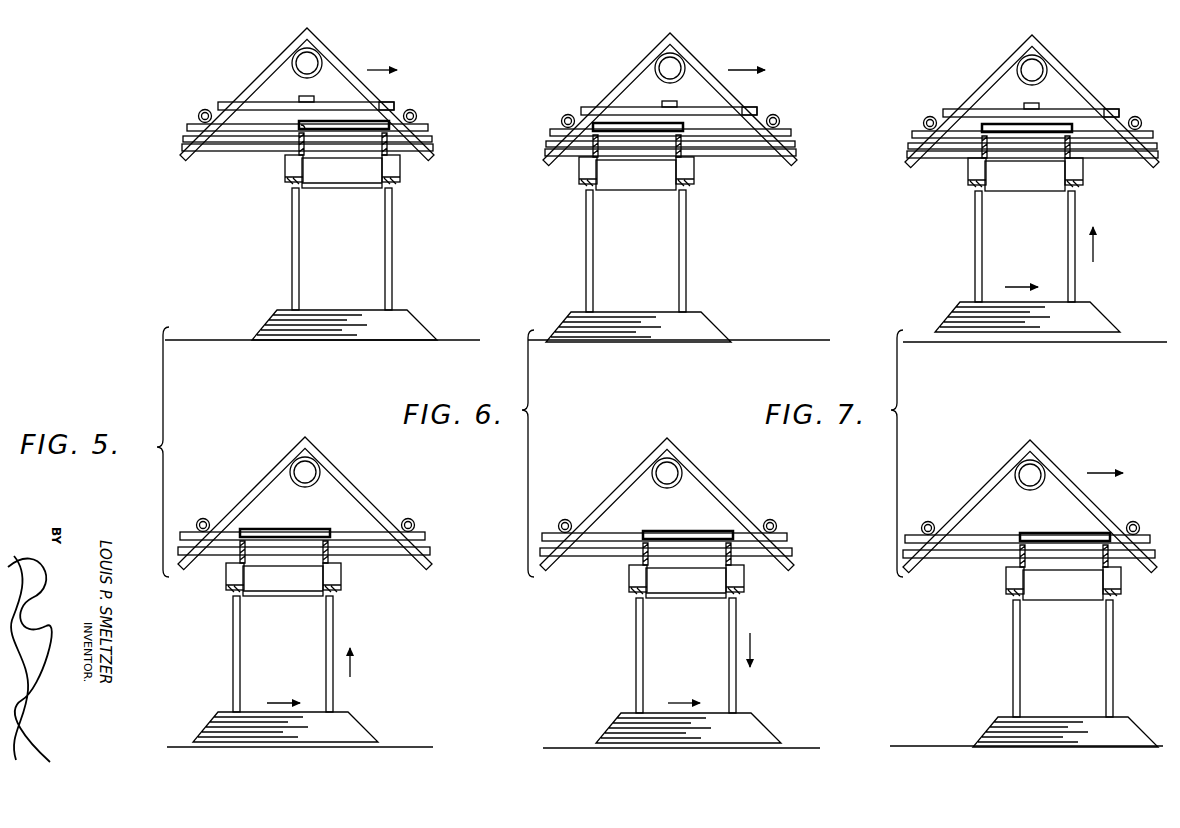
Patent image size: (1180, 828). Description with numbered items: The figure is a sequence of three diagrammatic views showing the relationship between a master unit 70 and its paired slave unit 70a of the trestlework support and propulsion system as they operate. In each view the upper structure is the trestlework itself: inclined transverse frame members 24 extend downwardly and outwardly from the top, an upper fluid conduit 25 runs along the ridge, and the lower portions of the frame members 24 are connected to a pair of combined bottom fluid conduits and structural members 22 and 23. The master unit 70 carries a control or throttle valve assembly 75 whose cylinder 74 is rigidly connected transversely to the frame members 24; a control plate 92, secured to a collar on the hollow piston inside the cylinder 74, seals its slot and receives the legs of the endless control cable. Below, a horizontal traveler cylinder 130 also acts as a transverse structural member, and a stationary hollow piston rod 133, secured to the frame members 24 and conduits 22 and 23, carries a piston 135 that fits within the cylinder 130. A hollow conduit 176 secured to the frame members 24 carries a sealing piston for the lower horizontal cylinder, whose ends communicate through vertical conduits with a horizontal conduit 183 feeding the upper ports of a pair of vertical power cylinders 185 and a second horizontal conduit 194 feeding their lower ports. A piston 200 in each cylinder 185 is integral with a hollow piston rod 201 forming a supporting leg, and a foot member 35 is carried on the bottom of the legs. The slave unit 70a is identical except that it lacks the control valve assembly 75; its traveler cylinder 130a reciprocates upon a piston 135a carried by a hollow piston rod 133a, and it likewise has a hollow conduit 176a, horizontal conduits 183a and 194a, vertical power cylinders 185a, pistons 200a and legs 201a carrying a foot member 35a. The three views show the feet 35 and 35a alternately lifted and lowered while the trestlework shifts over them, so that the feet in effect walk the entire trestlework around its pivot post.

In FIG. 5, the combined bottom fluid conduit and structural member 22 is at (197, 117).
In FIG. 6, the combined bottom fluid conduit and structural member 22 is at (570, 114).
In FIG. 7, the combined bottom fluid conduit and structural member 22 is at (923, 118).
In FIG. 5, the combined bottom fluid conduit and structural member 23 is at (418, 115).
In FIG. 6, the combined bottom fluid conduit and structural member 23 is at (777, 115).
In FIG. 7, the combined bottom fluid conduit and structural member 23 is at (1137, 118).
In FIG. 5, the inclined transverse frame member 24 is at (328, 55).
In FIG. 6, the inclined transverse frame member 24 is at (647, 55).
In FIG. 7, the inclined transverse frame member 24 is at (993, 72).
In FIG. 5, the upper fluid conduit 25 is at (292, 60).
In FIG. 6, the upper fluid conduit 25 is at (670, 48).
In FIG. 7, the upper fluid conduit 25 is at (1037, 55).
In FIG. 5, the foot member 35 is at (418, 333).
In FIG. 6, the foot member 35 is at (712, 333).
In FIG. 7, the foot member 35 is at (1102, 321).
In FIG. 5, the foot member 35a is at (357, 729).
In FIG. 6, the foot member 35a is at (762, 733).
In FIG. 7, the foot member 35a is at (993, 729).
In FIG. 5, the trestlework support and propulsion unit 70 is at (202, 92).
In FIG. 6, the trestlework support and propulsion unit 70 is at (575, 233).
In FIG. 7, the trestlework support and propulsion unit 70 is at (963, 223).
In FIG. 5, the slave unit 70a is at (272, 450).
In FIG. 6, the slave unit 70a is at (627, 620).
In FIG. 7, the slave unit 70a is at (1005, 627).
In FIG. 5, the cylinder 74 is at (275, 103).
In FIG. 6, the cylinder 74 is at (638, 105).
In FIG. 7, the cylinder 74 is at (1003, 108).
In FIG. 5, the control or throttle valve assembly 75 is at (342, 100).
In FIG. 6, the control or throttle valve assembly 75 is at (753, 98).
In FIG. 7, the control or throttle valve assembly 75 is at (1118, 102).
In FIG. 5, the control plate 92 is at (310, 97).
In FIG. 6, the control plate 92 is at (673, 101).
In FIG. 7, the control plate 92 is at (1038, 103).
In FIG. 5, the horizontal traveler cylinder 130 is at (358, 125).
In FIG. 6, the horizontal traveler cylinder 130 is at (615, 123).
In FIG. 7, the horizontal traveler cylinder 130 is at (995, 124).
In FIG. 5, the horizontal traveler cylinder 130a is at (265, 530).
In FIG. 6, the horizontal traveler cylinder 130a is at (692, 532).
In FIG. 7, the horizontal traveler cylinder 130a is at (1040, 532).
In FIG. 5, the stationary hollow piston rod 133 is at (258, 135).
In FIG. 6, the stationary hollow piston rod 133 is at (747, 132).
In FIG. 7, the stationary hollow piston rod 133 is at (953, 135).
In FIG. 5, the hollow piston rod 133a is at (222, 538).
In FIG. 6, the hollow piston rod 133a is at (607, 538).
In FIG. 7, the hollow piston rod 133a is at (950, 538).
In FIG. 5, the piston 135 is at (303, 125).
In FIG. 5, the piston 135a is at (305, 528).
In FIG. 5, the hollow conduit 176 is at (212, 143).
In FIG. 5, the hollow conduit 176a is at (382, 550).
In FIG. 5, the horizontal conduit 183 is at (363, 158).
In FIG. 5, the horizontal conduit 183a is at (327, 543).
In FIG. 5, the vertical power cylinder 185 is at (288, 168).
In FIG. 6, the vertical power cylinder 185 is at (582, 165).
In FIG. 7, the vertical power cylinder 185 is at (970, 184).
In FIG. 5, the vertical power cylinder 185a is at (227, 570).
In FIG. 6, the vertical power cylinder 185a is at (630, 576).
In FIG. 7, the vertical power cylinder 185a is at (1005, 581).
In FIG. 5, the horizontal conduit 194 is at (327, 187).
In FIG. 5, the horizontal conduit 194a is at (275, 597).
In FIG. 5, the piston 200 is at (290, 182).
In FIG. 6, the piston 200 is at (636, 175).
In FIG. 7, the piston 200 is at (986, 171).
In FIG. 5, the piston 200a is at (323, 585).
In FIG. 6, the piston 200a is at (630, 587).
In FIG. 7, the piston 200a is at (1122, 593).
In FIG. 5, the hollow piston rod or leg 201 is at (295, 242).
In FIG. 6, the hollow piston rod or leg 201 is at (588, 258).
In FIG. 7, the hollow piston rod or leg 201 is at (978, 245).
In FIG. 5, the leg 201a is at (335, 630).
In FIG. 6, the leg 201a is at (738, 624).
In FIG. 7, the leg 201a is at (1110, 650).